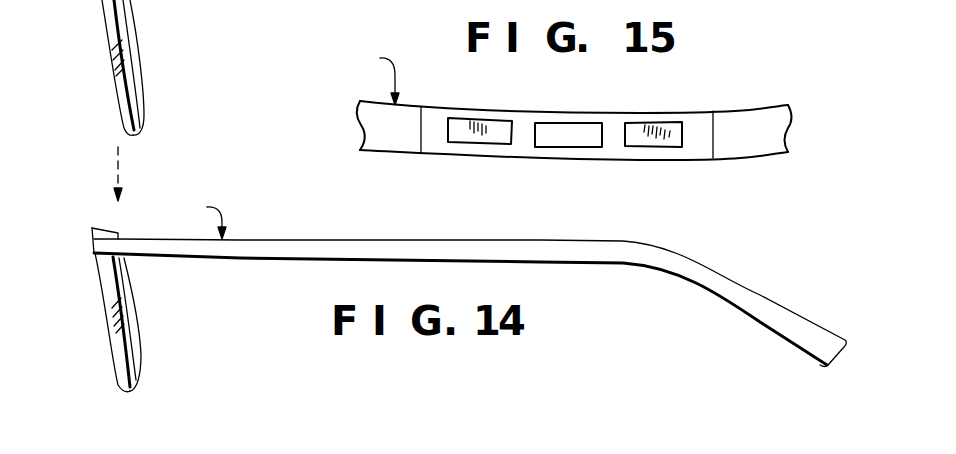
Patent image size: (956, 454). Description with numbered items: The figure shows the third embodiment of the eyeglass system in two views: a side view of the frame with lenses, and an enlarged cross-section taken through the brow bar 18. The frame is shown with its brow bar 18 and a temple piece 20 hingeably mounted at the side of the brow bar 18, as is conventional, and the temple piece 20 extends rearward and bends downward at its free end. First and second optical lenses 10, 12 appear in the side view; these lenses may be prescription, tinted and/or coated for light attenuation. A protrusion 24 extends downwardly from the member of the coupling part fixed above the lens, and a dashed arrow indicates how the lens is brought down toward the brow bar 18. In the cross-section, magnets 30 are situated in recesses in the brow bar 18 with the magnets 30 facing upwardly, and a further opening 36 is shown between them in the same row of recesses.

In FIG. 14, the lens 10 is at (143, 353).
In FIG. 14, the lens 12 is at (145, 88).
In FIG. 15, the temple end portion 18 is at (762, 117).
In FIG. 14, the temple end portion 18 is at (92, 242).
In FIG. 15, the temple 20 is at (574, 98).
In FIG. 14, the temple 20 is at (259, 253).
In FIG. 14, the frame 24 is at (70, 0).
In FIG. 15, the aperture 30 is at (677, 148).
In FIG. 15, the aperture 36 is at (581, 140).